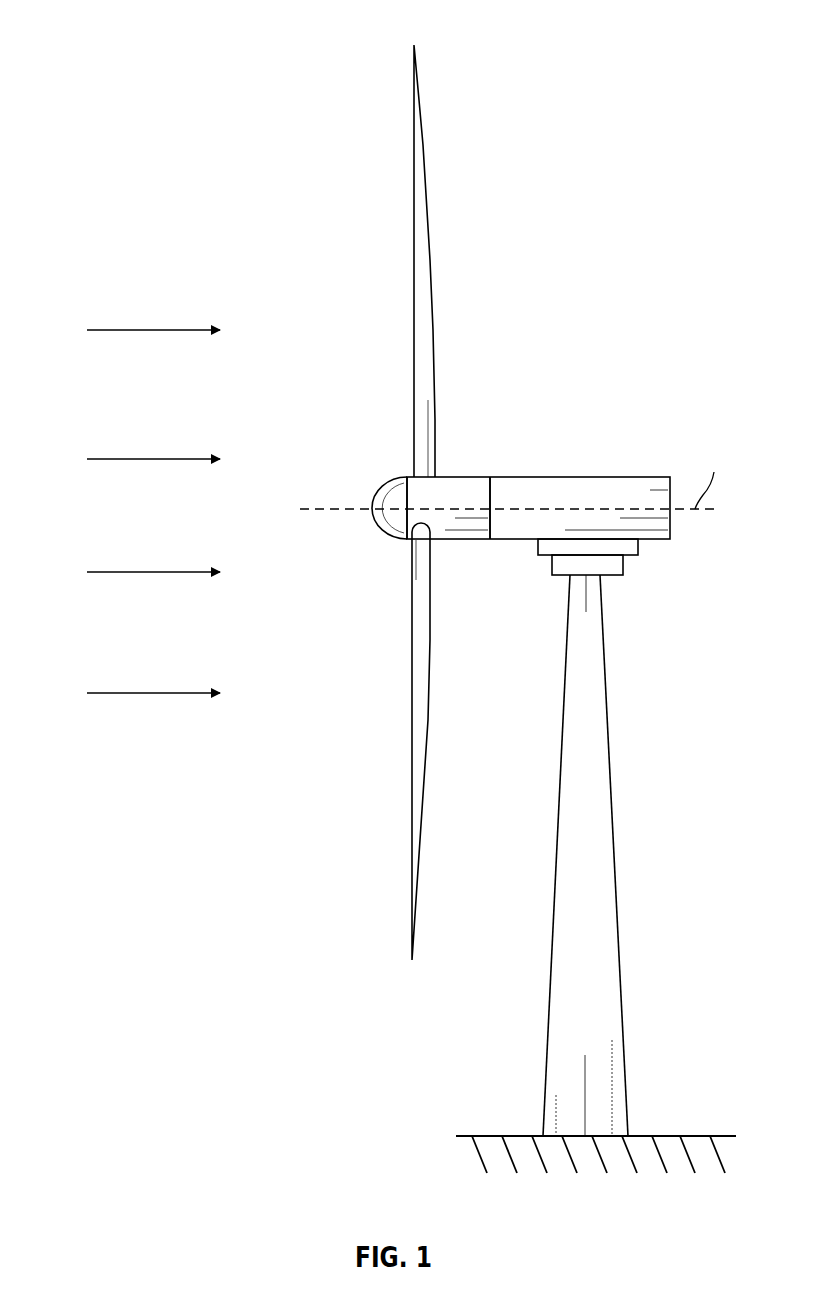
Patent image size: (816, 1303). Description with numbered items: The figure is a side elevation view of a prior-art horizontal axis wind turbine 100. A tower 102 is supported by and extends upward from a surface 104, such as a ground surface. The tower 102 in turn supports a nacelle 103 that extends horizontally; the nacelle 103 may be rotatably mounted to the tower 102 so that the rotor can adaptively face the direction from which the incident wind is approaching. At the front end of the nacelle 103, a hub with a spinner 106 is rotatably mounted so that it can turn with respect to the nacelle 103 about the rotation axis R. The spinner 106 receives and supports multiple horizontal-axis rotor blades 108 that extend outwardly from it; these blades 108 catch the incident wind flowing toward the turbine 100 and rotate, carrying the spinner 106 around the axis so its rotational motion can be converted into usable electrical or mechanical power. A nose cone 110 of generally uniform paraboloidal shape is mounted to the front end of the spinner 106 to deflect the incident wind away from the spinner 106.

The horizontal axis wind turbine 100 is at (121, 26).
The tower 102 is at (593, 753).
The nacelle 103 is at (588, 500).
The surface 104 is at (690, 1136).
The spinner 106 is at (461, 502).
The rotor blades 108 is at (427, 318).
The nose cone 110 is at (388, 520).